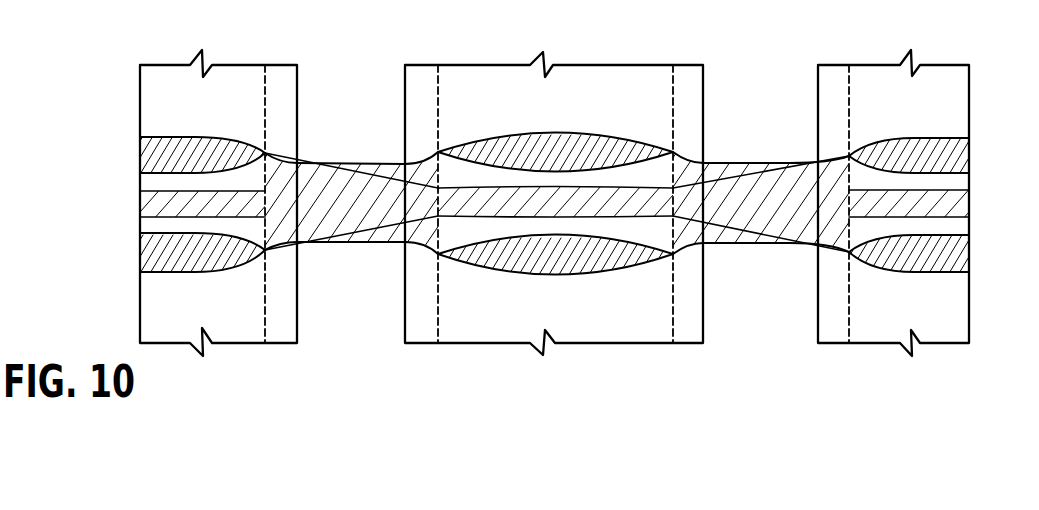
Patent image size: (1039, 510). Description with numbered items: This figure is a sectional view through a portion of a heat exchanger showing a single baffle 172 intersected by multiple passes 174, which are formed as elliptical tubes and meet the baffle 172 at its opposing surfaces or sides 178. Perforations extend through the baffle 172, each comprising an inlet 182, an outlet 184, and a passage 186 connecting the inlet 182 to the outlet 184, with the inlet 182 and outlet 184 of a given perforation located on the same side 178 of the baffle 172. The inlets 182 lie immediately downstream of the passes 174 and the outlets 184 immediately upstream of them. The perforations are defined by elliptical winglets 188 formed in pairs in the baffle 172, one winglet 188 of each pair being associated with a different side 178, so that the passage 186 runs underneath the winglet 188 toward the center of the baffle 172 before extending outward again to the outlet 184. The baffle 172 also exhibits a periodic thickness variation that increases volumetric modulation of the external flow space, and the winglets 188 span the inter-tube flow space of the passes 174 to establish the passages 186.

The baffle 172 is at (530, 202).
The pass 174 is at (297, 101).
The side 178 is at (908, 138).
The inlet 182 is at (393, 163).
The outlet 184 is at (738, 163).
The passage 186 is at (178, 183).
The winglet 188 is at (578, 143).